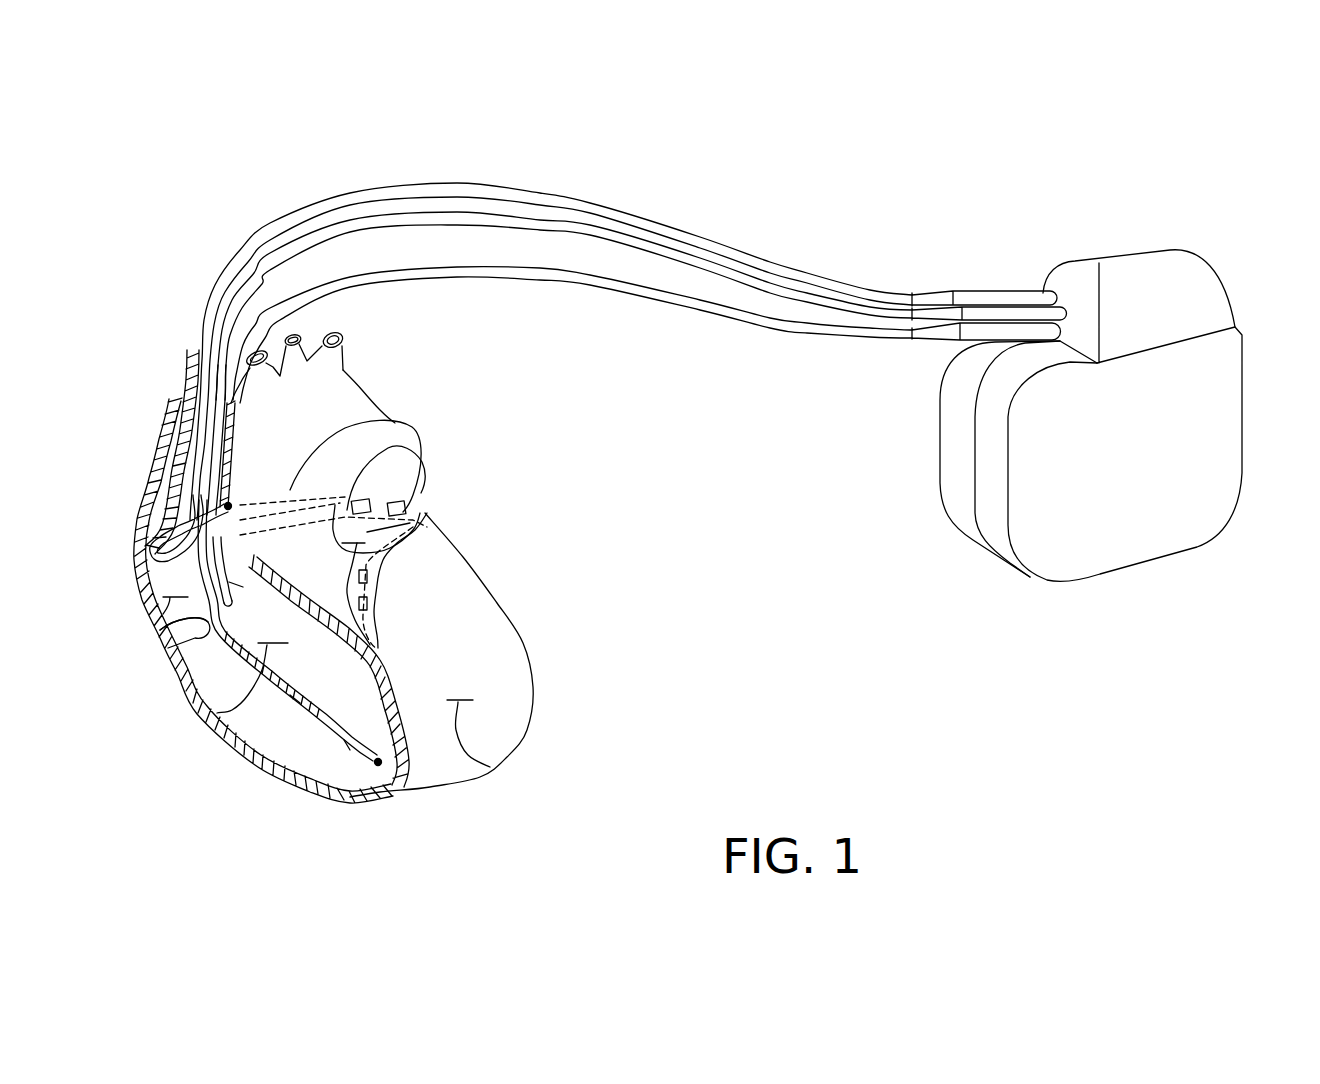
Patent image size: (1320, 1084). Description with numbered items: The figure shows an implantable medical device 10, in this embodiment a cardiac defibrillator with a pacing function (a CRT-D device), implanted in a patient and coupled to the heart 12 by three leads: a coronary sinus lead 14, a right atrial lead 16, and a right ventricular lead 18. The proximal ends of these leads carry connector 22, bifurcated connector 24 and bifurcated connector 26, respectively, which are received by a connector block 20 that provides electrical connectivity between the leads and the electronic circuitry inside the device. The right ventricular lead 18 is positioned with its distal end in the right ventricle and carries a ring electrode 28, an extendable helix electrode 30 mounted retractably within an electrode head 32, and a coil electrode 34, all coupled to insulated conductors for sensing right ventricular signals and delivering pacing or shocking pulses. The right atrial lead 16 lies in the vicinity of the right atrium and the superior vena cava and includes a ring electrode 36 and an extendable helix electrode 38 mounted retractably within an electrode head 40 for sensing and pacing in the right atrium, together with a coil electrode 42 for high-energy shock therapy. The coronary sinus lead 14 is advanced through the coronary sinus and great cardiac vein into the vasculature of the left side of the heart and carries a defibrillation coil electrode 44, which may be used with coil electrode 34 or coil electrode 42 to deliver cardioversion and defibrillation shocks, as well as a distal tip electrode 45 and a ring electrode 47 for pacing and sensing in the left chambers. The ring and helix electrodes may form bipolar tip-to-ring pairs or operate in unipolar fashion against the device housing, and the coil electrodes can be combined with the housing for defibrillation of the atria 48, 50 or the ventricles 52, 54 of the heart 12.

The implantable medical device 10 is at (1272, 376).
The heart 12 is at (552, 565).
The coronary sinus lead 14 is at (782, 330).
The right atrial lead 16 is at (805, 275).
The right ventricular lead 18 is at (468, 228).
The connector block 20 is at (1140, 270).
The connector 22 is at (962, 337).
The bifurcated connector 24 is at (1033, 300).
The bifurcated connector 26 is at (983, 313).
The ring electrode 28 is at (317, 730).
The extendable helix electrode 30 is at (377, 767).
The electrode head 32 is at (360, 750).
The coil electrode 34 is at (297, 697).
The ring electrode 36 is at (190, 543).
The extendable helix electrode 38 is at (227, 500).
The electrode head 40 is at (243, 547).
The coil electrode 42 is at (185, 370).
The defibrillation coil electrode 44 is at (397, 500).
The distal tip electrode 45 is at (372, 603).
The ring electrode 47 is at (372, 570).
The atrium 48 is at (160, 630).
The atrium 50 is at (408, 527).
The ventricle 52 is at (213, 720).
The ventricle 54 is at (490, 763).